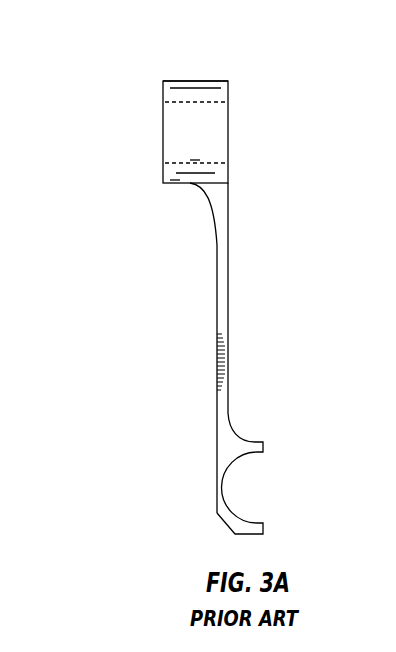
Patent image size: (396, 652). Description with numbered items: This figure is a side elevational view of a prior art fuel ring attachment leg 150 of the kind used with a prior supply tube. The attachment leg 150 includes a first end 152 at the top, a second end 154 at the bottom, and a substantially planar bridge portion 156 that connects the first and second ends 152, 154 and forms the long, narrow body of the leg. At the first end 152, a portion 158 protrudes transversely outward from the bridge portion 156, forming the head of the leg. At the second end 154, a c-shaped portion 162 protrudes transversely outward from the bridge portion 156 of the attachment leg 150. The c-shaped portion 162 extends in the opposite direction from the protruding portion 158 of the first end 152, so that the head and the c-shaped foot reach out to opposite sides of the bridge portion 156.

The attachment leg 150 is at (108, 153).
The first end 152 is at (228, 112).
The second end 154 is at (217, 485).
The bridge portion 156 is at (226, 310).
The protruding portion 158 is at (197, 80).
The c-shaped portion 162 is at (248, 485).